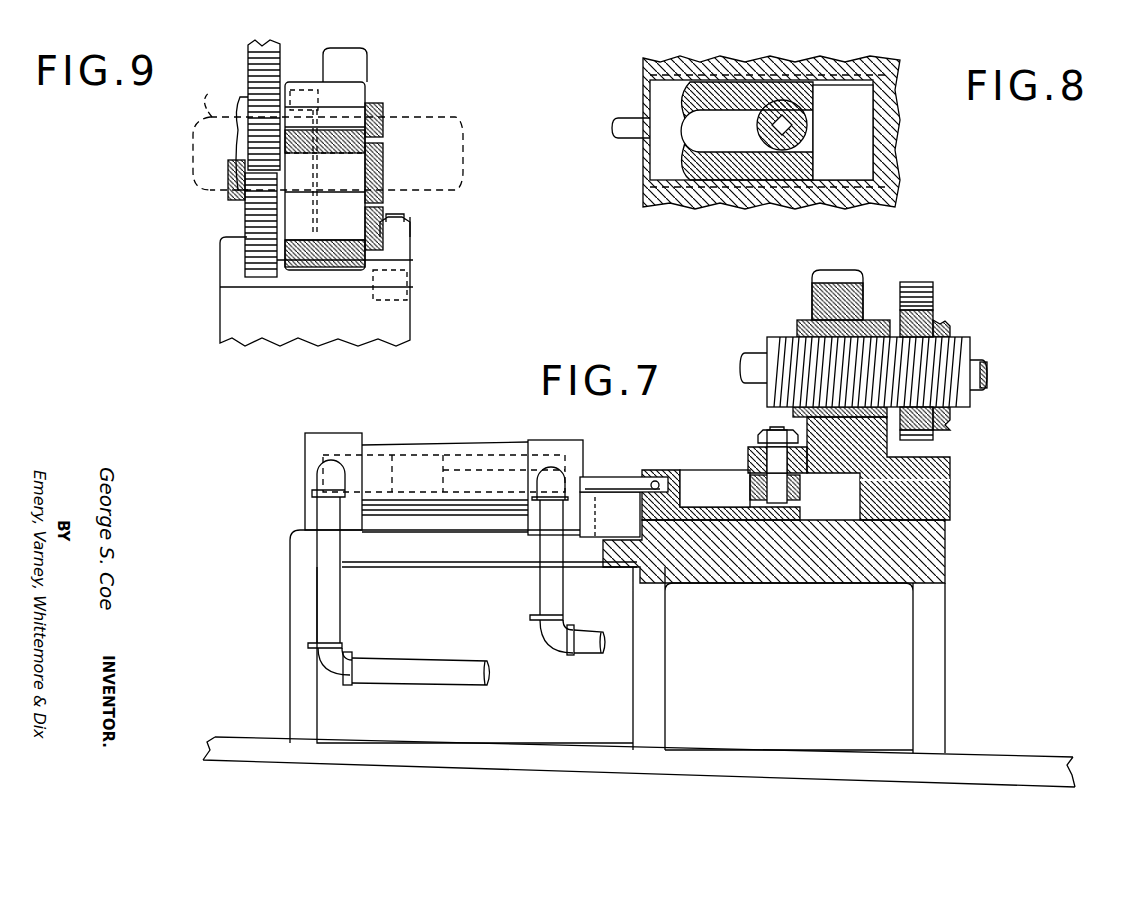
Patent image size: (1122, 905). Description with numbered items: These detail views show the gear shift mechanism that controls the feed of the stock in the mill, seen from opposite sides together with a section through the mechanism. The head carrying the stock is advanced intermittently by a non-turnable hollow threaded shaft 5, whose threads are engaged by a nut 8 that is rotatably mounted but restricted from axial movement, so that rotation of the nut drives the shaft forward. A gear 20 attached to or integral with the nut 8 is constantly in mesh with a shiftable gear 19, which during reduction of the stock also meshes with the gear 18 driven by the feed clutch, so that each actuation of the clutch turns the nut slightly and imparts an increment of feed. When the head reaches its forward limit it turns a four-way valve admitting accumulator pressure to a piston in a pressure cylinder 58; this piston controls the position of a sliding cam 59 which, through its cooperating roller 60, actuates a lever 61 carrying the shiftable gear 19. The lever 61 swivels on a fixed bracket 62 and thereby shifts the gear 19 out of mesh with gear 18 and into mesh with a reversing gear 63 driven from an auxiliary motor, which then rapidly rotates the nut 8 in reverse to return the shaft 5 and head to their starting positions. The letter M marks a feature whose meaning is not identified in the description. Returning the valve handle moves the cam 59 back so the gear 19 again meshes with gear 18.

In FIG. 9, the threaded shaft 5 is at (212, 100).
In FIG. 7, the threaded shaft 5 is at (973, 347).
In FIG. 9, the nut 8 is at (240, 98).
In FIG. 7, the nut 8 is at (604, 476).
In FIG. 9, the gear 18 is at (248, 46).
In FIG. 9, the shiftable gear 19 is at (270, 54).
In FIG. 7, the shiftable gear 19 is at (927, 283).
In FIG. 9, the gear 20 is at (247, 88).
In FIG. 7, the gear 20 is at (933, 310).
In FIG. 7, the pressure cylinder 58 is at (497, 445).
In FIG. 8, the sliding cam 59 is at (733, 80).
In FIG. 7, the sliding cam 59 is at (673, 470).
In FIG. 9, the roller 60 is at (405, 275).
In FIG. 8, the roller 60 is at (757, 131).
In FIG. 7, the roller 60 is at (750, 478).
In FIG. 9, the lever 61 is at (367, 58).
In FIG. 7, the lever 61 is at (813, 293).
In FIG. 9, the fixed bracket 62 is at (304, 90).
In FIG. 7, the fixed bracket 62 is at (873, 318).
In FIG. 9, the reversing gear 63 is at (245, 225).
In FIG. 7, the motor connection M is at (987, 369).